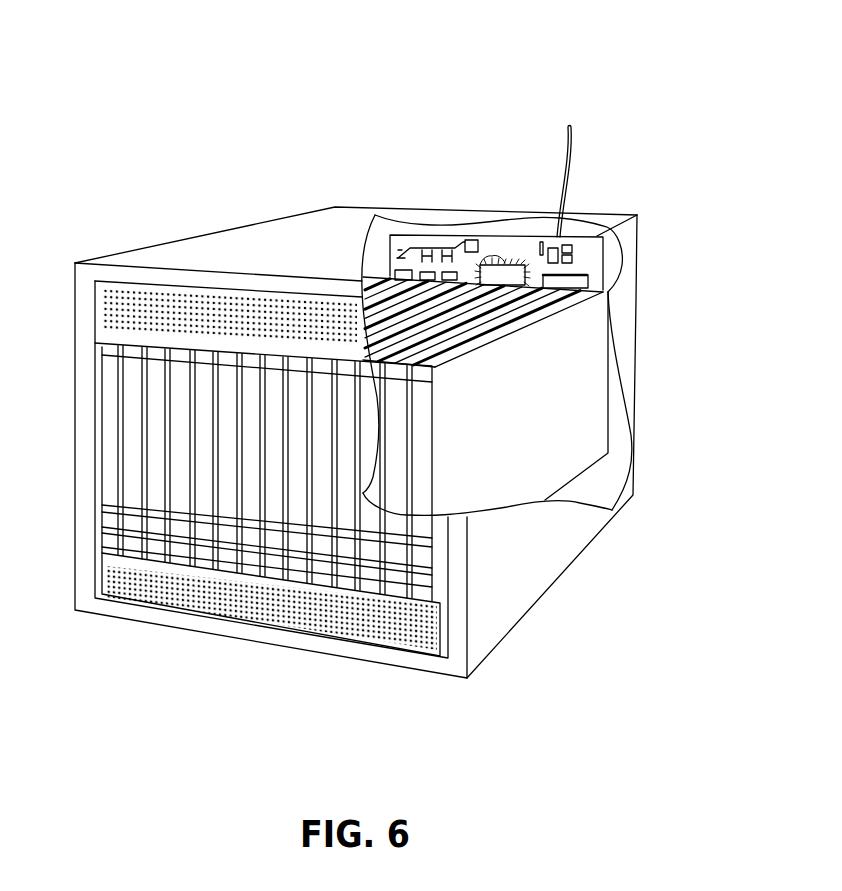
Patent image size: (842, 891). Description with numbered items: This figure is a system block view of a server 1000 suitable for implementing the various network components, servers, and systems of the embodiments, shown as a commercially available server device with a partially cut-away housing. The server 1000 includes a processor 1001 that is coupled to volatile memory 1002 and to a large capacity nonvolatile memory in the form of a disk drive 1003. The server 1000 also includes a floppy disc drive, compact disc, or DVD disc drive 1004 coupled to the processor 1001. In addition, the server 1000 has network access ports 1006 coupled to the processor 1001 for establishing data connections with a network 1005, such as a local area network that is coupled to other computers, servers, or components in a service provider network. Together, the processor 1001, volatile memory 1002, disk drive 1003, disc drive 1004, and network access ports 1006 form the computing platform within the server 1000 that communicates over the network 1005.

The server 1000 is at (141, 60).
The processor 1001 is at (485, 265).
The volatile memory 1002 is at (543, 276).
The disk drive 1003 is at (115, 488).
The DVD disc drive 1004 is at (182, 502).
The network 1005 is at (577, 142).
The network access ports 1006 is at (248, 517).